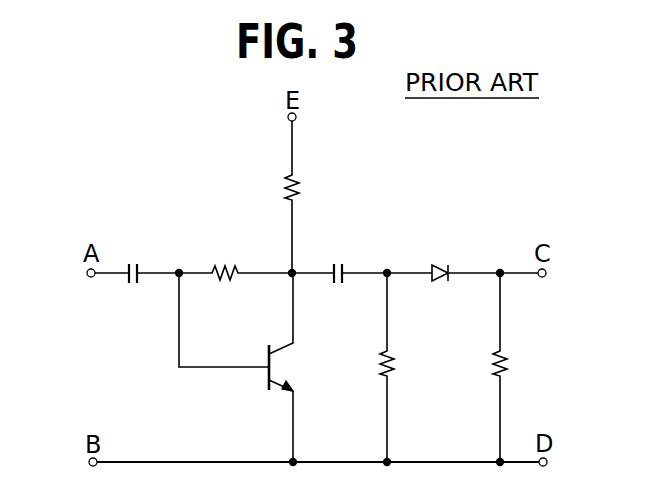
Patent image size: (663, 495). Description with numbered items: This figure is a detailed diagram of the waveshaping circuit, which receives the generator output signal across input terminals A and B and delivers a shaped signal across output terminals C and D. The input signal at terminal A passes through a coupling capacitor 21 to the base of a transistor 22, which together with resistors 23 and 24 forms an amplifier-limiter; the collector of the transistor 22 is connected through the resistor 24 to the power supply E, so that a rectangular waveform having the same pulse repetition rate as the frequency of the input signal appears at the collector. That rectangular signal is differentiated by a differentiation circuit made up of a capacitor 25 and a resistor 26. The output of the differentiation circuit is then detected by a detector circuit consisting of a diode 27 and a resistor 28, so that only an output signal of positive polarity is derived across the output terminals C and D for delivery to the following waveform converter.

The coupling capacitor 21 is at (132, 262).
The transistor 22 is at (288, 366).
The resistor 23 is at (223, 262).
The resistor 24 is at (300, 186).
The capacitor 25 is at (338, 262).
The resistor 26 is at (396, 362).
The diode 27 is at (443, 262).
The resistor 28 is at (508, 355).